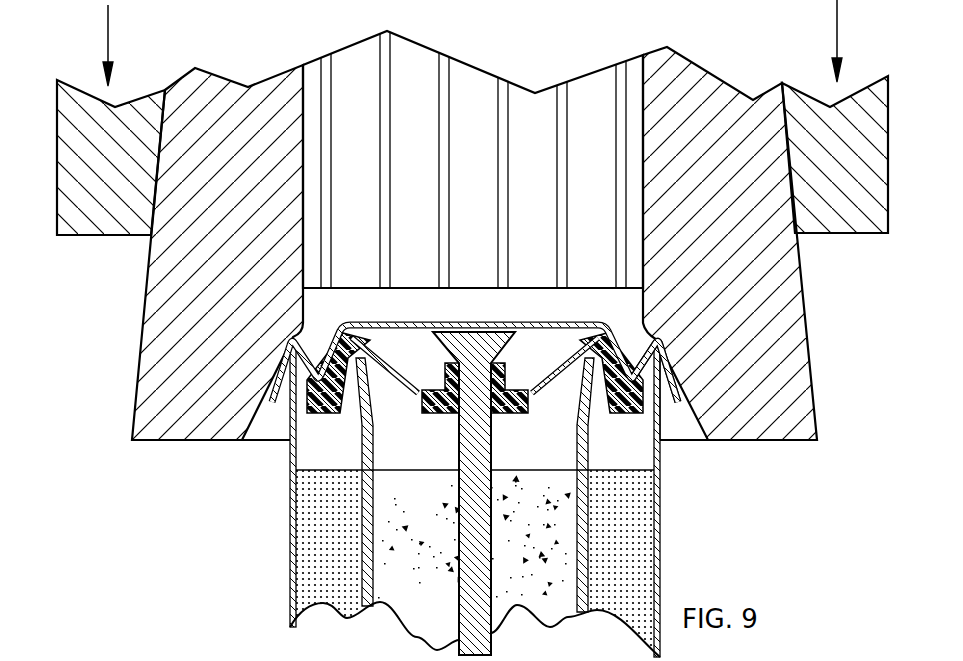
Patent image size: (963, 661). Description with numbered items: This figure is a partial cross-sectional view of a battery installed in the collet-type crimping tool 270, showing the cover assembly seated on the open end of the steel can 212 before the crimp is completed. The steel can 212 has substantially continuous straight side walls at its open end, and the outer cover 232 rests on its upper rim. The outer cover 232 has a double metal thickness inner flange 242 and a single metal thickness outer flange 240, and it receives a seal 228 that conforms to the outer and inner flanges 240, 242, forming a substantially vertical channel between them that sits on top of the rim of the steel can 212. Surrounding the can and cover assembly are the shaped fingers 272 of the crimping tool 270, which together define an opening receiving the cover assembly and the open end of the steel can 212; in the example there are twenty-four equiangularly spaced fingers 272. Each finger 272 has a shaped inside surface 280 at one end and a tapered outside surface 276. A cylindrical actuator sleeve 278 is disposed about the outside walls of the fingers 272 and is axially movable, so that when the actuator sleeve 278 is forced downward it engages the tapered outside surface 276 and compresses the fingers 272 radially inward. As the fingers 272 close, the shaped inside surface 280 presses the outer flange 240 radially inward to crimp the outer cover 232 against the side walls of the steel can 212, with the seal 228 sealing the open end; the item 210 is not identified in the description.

The container assembly 210 is at (742, 577).
The steel can 212 is at (290, 488).
The seal 228 is at (394, 374).
The outer cover 232 is at (417, 321).
The outer flange 240 is at (664, 422).
The inner flange 242 is at (641, 336).
The collet-type crimping tool 270 is at (553, 42).
The shaped fingers 272 is at (797, 397).
The tapered outside surface 276 is at (797, 263).
The cylindrical actuator sleeve 278 is at (883, 117).
The shaped inside surface 280 is at (679, 405).